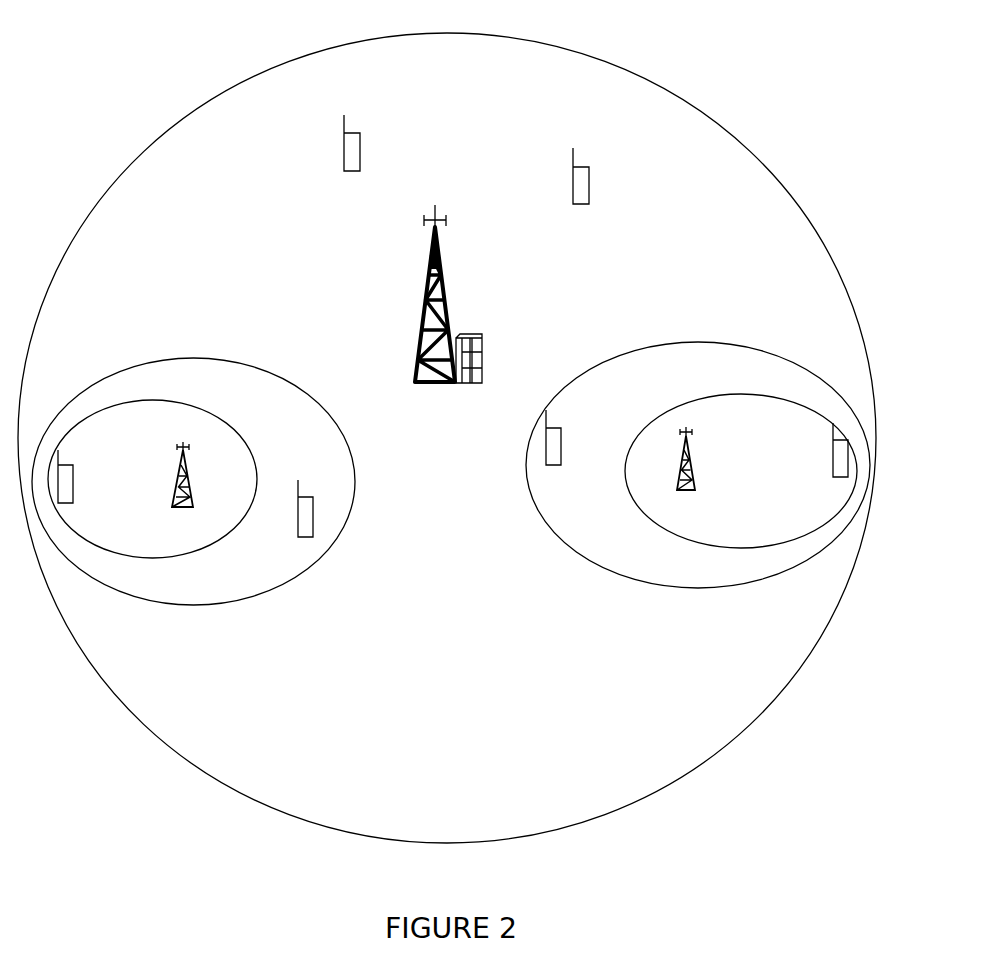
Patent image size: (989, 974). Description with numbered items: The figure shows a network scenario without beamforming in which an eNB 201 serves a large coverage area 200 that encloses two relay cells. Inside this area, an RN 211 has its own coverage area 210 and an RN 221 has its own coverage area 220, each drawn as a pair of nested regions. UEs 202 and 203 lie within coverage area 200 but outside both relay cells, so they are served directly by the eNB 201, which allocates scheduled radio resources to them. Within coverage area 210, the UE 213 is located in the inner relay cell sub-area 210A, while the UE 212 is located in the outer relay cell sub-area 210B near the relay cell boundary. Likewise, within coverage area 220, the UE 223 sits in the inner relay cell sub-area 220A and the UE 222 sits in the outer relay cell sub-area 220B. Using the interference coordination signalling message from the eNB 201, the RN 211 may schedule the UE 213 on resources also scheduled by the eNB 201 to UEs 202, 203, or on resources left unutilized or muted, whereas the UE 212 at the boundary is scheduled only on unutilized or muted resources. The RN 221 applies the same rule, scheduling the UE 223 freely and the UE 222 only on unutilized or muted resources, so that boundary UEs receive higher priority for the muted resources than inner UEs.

The coverage area 200 is at (603, 60).
The eNB 201 is at (447, 329).
The UE 202 is at (351, 173).
The UE 203 is at (579, 199).
The coverage area 210 is at (742, 346).
The relay cell sub-area 210A is at (741, 471).
The relay cell sub-area 210B is at (649, 382).
The RN 211 is at (692, 477).
The UE 212 is at (554, 457).
The UE 213 is at (848, 477).
The coverage area 220 is at (98, 382).
The relay cell sub-area 220A is at (152, 479).
The relay cell sub-area 220B is at (281, 437).
The RN 221 is at (187, 493).
The UE 222 is at (304, 528).
The UE 223 is at (73, 503).